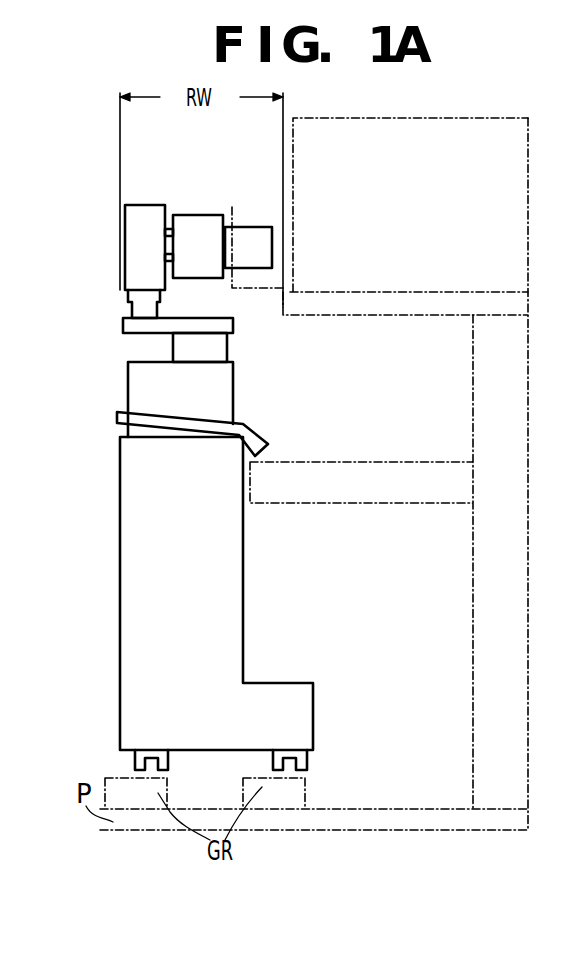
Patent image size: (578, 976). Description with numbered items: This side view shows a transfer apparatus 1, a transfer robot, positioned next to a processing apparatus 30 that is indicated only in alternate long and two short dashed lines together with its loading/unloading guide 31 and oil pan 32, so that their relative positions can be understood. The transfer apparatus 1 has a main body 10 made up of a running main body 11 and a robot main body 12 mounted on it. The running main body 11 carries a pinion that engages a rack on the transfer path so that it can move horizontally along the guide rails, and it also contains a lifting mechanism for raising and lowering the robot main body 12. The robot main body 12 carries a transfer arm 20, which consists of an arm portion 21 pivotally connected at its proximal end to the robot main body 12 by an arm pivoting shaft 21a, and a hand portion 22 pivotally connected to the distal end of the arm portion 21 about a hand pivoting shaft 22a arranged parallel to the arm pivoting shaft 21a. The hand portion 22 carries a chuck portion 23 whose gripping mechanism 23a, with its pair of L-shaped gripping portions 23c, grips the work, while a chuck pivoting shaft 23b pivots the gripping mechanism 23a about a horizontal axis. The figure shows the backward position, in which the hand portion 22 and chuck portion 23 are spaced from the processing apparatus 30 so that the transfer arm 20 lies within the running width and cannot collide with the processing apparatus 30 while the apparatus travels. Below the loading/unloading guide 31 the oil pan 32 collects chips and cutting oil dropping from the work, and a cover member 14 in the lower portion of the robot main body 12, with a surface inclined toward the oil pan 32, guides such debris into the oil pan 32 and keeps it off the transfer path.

The transfer apparatus 1 is at (66, 112).
The main body 10 is at (97, 490).
The running main body 11 is at (120, 620).
The robot main body 12 is at (128, 386).
The cover member 14 is at (252, 425).
The transfer arm 20 is at (90, 210).
The arm portion 21 is at (172, 318).
The arm pivoting shaft 21a is at (230, 348).
The hand portion 22 is at (125, 206).
The hand pivoting shaft 22a is at (130, 301).
The chuck portion 23 is at (290, 172).
The gripping mechanism 23a is at (193, 212).
The chuck pivoting shaft 23b is at (168, 212).
The gripping portion 23c is at (272, 206).
The processing apparatus 30 is at (493, 118).
The loading/unloading guide 31 is at (365, 292).
The oil pan 32 is at (355, 462).